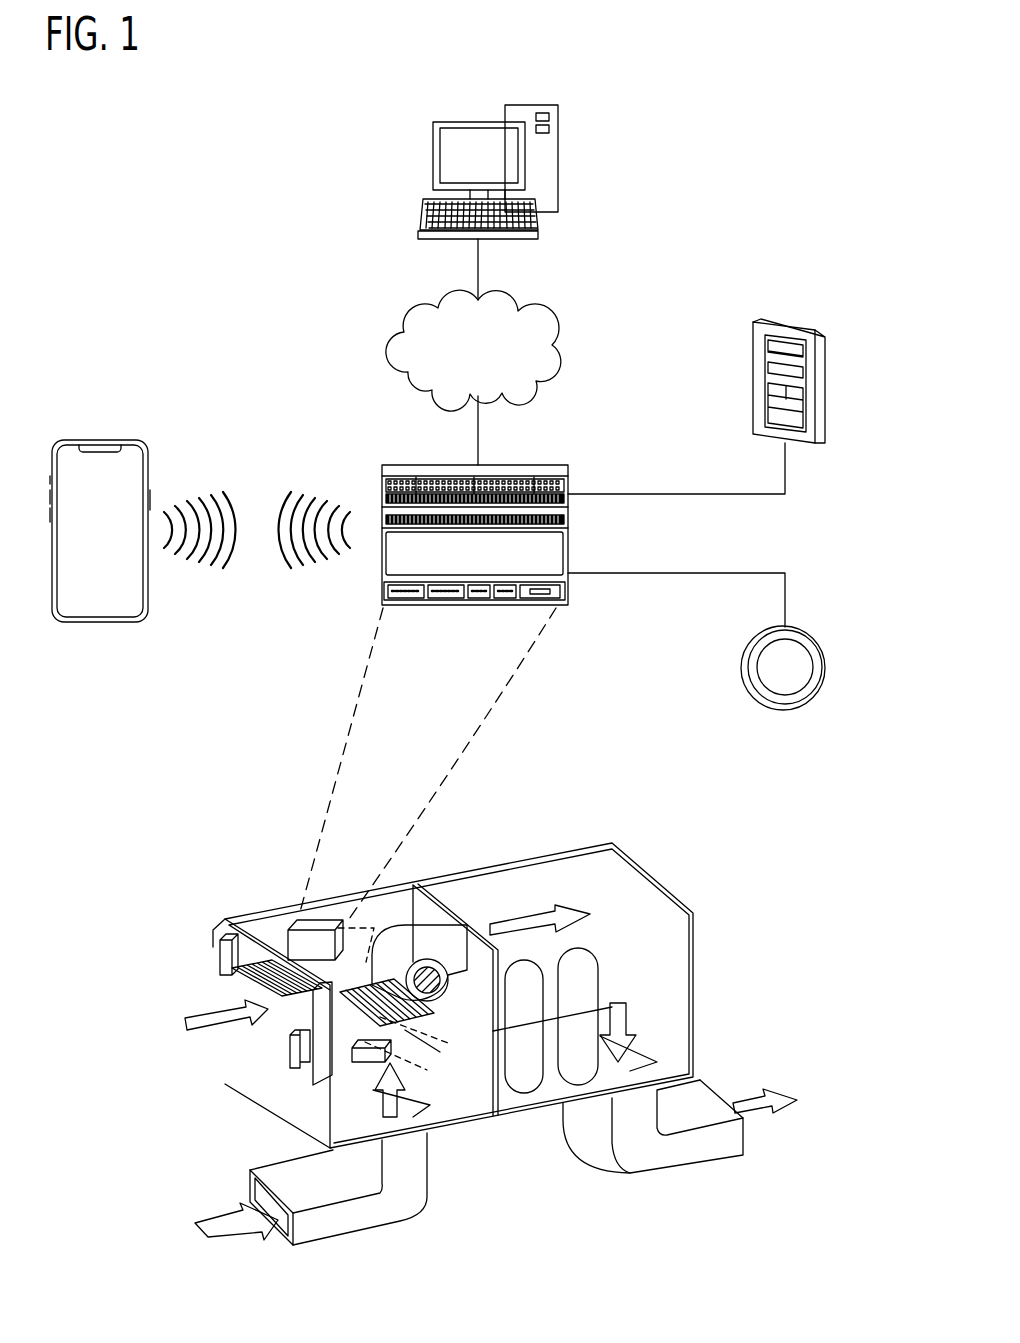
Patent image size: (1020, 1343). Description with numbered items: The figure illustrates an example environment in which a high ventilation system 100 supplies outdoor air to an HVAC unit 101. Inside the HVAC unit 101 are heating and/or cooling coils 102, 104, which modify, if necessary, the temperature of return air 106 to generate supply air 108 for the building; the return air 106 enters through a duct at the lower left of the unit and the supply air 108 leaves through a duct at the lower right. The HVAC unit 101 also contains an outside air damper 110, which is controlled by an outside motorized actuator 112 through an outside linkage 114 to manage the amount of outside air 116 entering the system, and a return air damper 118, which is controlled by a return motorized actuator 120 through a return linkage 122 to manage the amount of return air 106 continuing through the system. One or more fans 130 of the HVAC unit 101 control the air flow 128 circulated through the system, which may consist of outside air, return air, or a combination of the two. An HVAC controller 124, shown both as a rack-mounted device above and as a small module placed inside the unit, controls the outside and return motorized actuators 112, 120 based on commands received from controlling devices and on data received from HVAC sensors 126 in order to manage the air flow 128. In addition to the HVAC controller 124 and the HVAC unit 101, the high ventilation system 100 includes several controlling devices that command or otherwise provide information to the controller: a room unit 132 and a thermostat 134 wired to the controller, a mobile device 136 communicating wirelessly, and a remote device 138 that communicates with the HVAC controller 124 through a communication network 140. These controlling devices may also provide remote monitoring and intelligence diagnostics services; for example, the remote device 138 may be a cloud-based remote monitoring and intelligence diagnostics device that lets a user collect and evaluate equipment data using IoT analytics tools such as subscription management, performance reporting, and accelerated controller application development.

The high ventilation system 100 is at (207, 191).
The HVAC unit 101 is at (190, 861).
The heating and/or cooling coil 102 is at (585, 990).
The heating and/or cooling coil 104 is at (525, 1067).
The return air 106 is at (222, 1220).
The supply air 108 is at (758, 1108).
The outside air damper 110 is at (247, 997).
The outside motorized actuator 112 is at (300, 1053).
The outside linkage 114 is at (287, 1013).
The outside air 116 is at (192, 1022).
The return air damper 118 is at (407, 1037).
The return motorized actuator 120 is at (352, 1045).
The return linkage 122 is at (415, 1040).
The HVAC controller 124 is at (418, 466).
The HVAC sensors 126 is at (223, 962).
The air flow 128 is at (528, 925).
The fan 130 is at (425, 935).
The room unit 132 is at (757, 378).
The thermostat 134 is at (745, 672).
The mobile device 136 is at (100, 440).
The remote device 138 is at (478, 120).
The communication network 140 is at (433, 308).